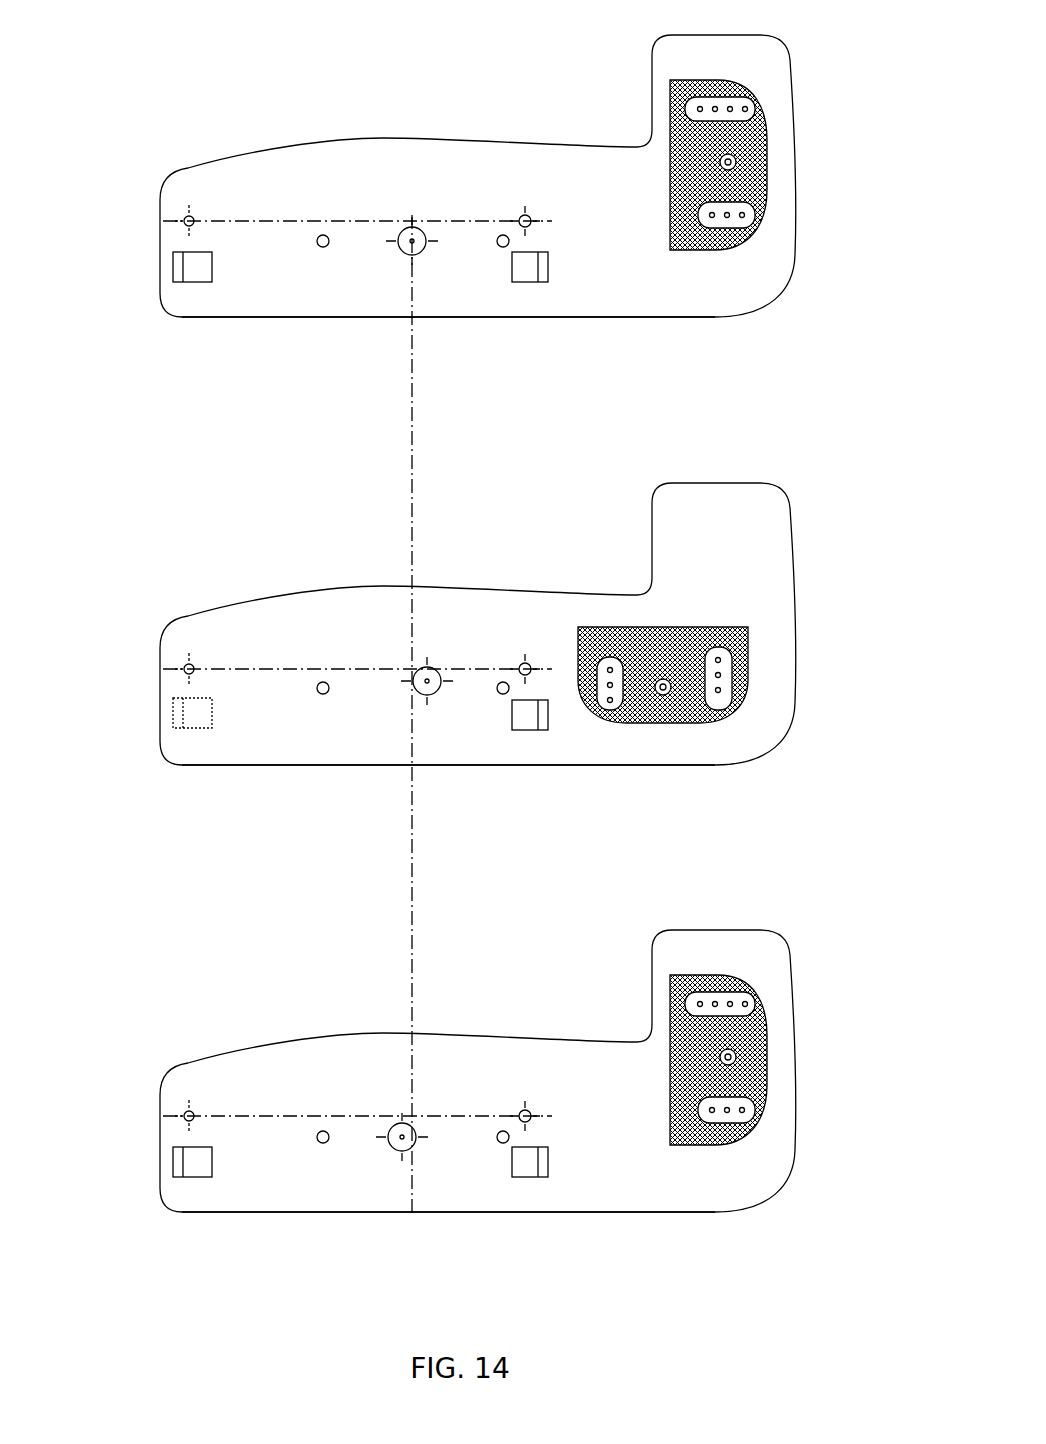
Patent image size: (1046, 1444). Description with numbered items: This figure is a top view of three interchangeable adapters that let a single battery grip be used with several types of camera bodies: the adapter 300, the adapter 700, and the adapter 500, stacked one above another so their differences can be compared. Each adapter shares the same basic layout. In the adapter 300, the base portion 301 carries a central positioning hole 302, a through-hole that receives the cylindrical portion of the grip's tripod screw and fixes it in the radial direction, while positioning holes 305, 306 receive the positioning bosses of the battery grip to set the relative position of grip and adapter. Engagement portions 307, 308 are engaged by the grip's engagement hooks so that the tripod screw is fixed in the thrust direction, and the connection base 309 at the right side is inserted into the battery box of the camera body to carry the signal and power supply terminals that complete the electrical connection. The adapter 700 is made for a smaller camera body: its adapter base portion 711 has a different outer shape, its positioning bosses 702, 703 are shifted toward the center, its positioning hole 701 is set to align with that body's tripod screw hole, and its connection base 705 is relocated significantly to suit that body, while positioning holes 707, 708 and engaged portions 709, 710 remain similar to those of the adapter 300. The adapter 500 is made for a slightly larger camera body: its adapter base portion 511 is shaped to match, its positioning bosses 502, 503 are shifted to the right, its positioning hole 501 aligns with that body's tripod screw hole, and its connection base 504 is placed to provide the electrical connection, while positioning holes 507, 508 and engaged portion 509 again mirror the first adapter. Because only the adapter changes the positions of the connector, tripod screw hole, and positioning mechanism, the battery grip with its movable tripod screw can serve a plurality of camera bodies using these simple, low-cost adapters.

The adapter 300 is at (767, 38).
The base portion 301 is at (293, 322).
The positioning hole 302 is at (423, 232).
The positioning hole 305 is at (187, 213).
The positioning hole 306 is at (523, 212).
The engagement portion 307 is at (177, 260).
The engagement portion 308 is at (545, 268).
The connection base 309 is at (747, 237).
The adapter 700 is at (770, 503).
The positioning hole 701 is at (430, 670).
The positioning boss 702 is at (320, 695).
The positioning boss 703 is at (500, 695).
The connection base 705 is at (713, 710).
The positioning hole 707 is at (185, 670).
The positioning hole 708 is at (545, 720).
The engaged portion 709 is at (172, 707).
The engaged portion 710 is at (523, 655).
The adapter base portion 711 is at (267, 752).
The adapter 500 is at (770, 948).
The positioning hole 501 is at (397, 1118).
The positioning boss 502 is at (320, 1145).
The positioning boss 503 is at (500, 1143).
The connection base 504 is at (740, 1065).
The positioning hole 507 is at (189, 1108).
The positioning hole 508 is at (528, 1110).
The engaged portion 509 is at (177, 1160).
The adapter base portion 511 is at (242, 1197).